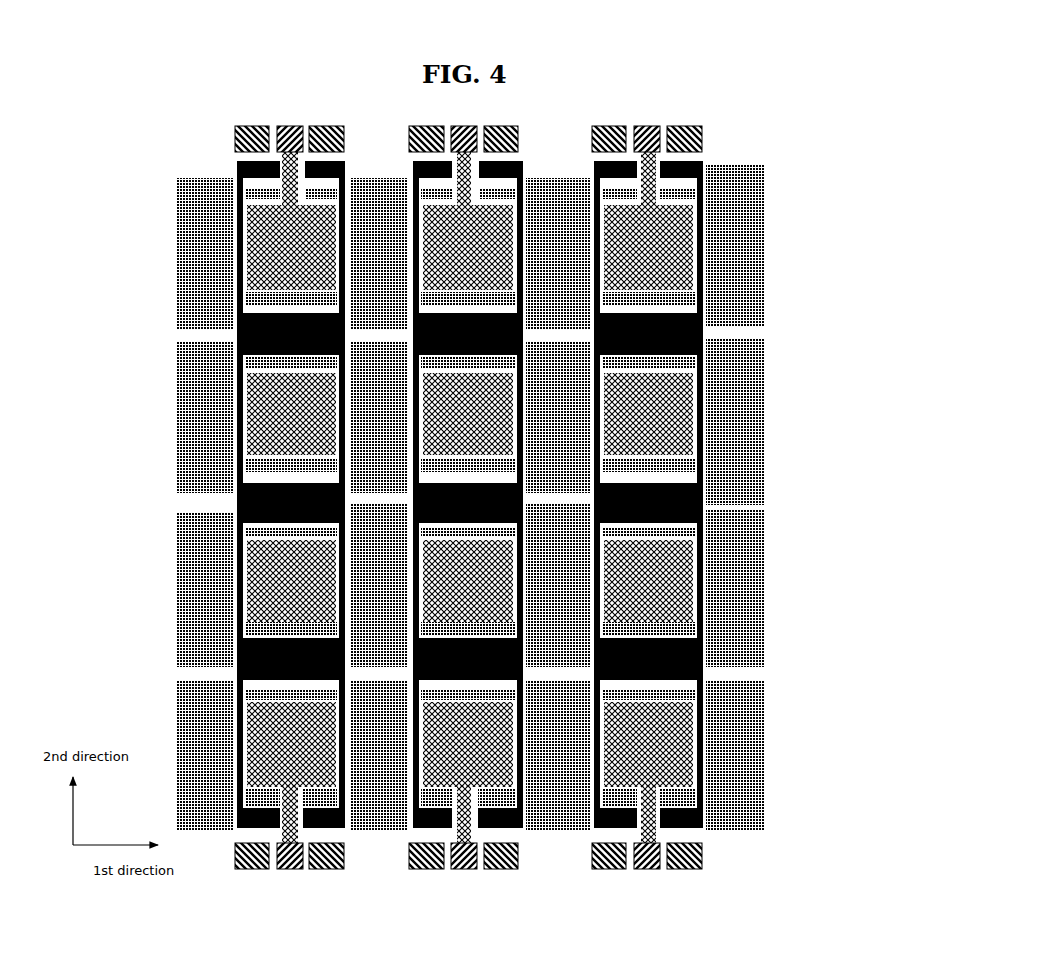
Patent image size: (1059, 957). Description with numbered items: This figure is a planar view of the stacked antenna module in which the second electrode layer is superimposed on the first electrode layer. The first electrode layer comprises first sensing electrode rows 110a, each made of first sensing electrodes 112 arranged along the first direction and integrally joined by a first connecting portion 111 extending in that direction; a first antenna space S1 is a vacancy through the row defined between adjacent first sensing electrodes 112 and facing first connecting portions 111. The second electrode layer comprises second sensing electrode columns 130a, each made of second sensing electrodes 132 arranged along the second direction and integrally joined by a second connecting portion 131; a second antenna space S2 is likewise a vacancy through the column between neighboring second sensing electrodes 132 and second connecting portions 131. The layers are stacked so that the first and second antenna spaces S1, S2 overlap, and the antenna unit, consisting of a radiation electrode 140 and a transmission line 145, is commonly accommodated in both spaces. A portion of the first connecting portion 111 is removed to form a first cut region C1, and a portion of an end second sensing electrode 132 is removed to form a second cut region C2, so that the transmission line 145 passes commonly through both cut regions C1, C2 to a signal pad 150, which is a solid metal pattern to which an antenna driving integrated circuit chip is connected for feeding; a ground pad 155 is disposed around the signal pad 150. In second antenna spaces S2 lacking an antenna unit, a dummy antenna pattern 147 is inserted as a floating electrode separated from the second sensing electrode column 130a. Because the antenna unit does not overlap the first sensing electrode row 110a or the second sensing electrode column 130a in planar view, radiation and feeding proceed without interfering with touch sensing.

The first sensing electrode row 110a is at (525, 497).
The first connecting portion 111 is at (672, 295).
The first sensing electrode 112 is at (753, 292).
The second sensing electrode column 130a is at (708, 494).
The second connecting portion 131 is at (703, 578).
The second sensing electrode 132 is at (703, 652).
The radiation electrode 140 is at (680, 746).
The transmission line 145 is at (652, 807).
The dummy antenna pattern 147 is at (241, 594).
The signal pad 150 is at (661, 841).
The ground pad 155 is at (703, 856).
The first cut region C1 is at (268, 797).
The second cut region C2 is at (279, 183).
The first antenna space S1 is at (265, 700).
The second antenna space S2 is at (259, 478).